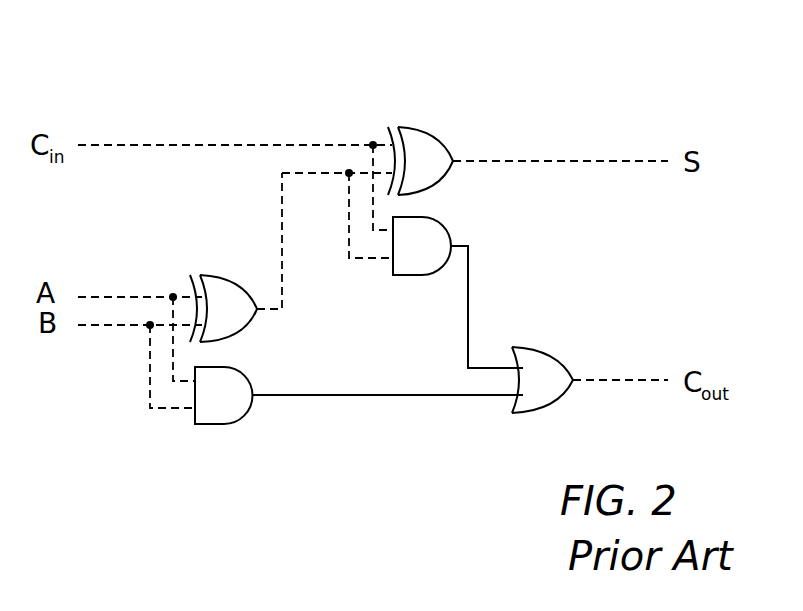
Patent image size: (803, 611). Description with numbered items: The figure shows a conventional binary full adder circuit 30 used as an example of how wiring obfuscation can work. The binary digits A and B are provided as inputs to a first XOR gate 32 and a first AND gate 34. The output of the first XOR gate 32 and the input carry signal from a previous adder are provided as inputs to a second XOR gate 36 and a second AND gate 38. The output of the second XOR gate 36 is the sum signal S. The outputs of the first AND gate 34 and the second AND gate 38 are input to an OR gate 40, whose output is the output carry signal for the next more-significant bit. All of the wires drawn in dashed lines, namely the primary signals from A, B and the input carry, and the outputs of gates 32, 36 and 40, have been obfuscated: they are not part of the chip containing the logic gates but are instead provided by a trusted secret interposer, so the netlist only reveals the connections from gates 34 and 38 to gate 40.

The adder circuit 30 is at (232, 110).
The first XOR gate 32 is at (220, 277).
The first AND gate 34 is at (218, 424).
The second XOR gate 36 is at (433, 133).
The second AND gate 38 is at (418, 275).
The OR gate 40 is at (525, 346).